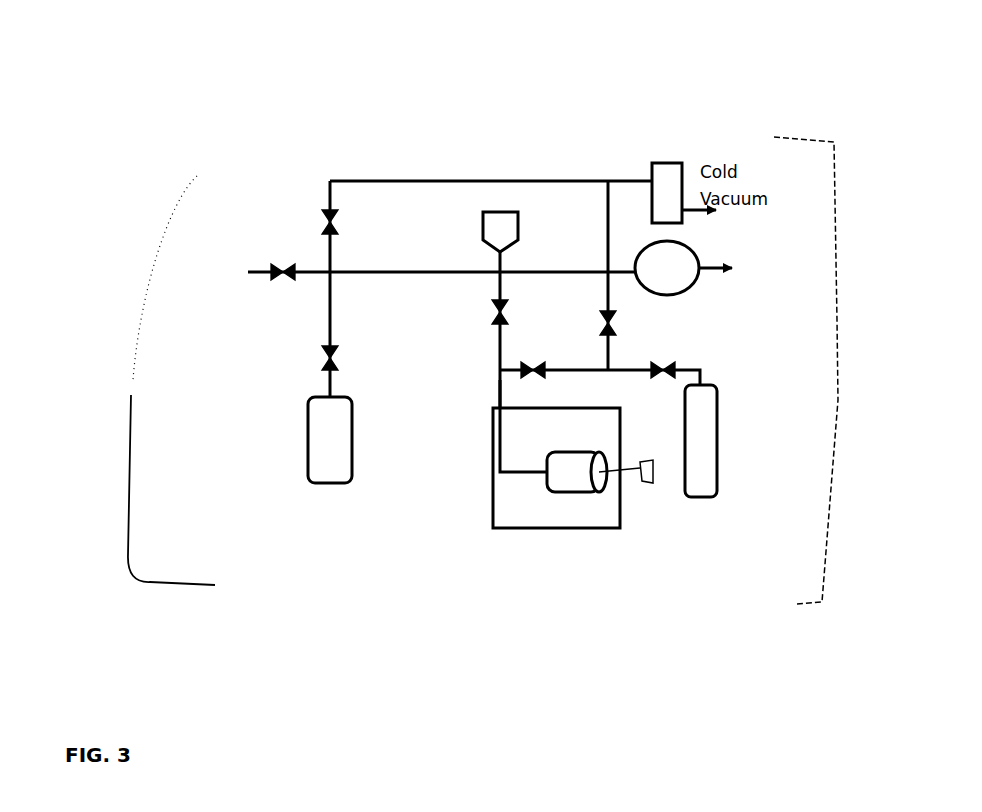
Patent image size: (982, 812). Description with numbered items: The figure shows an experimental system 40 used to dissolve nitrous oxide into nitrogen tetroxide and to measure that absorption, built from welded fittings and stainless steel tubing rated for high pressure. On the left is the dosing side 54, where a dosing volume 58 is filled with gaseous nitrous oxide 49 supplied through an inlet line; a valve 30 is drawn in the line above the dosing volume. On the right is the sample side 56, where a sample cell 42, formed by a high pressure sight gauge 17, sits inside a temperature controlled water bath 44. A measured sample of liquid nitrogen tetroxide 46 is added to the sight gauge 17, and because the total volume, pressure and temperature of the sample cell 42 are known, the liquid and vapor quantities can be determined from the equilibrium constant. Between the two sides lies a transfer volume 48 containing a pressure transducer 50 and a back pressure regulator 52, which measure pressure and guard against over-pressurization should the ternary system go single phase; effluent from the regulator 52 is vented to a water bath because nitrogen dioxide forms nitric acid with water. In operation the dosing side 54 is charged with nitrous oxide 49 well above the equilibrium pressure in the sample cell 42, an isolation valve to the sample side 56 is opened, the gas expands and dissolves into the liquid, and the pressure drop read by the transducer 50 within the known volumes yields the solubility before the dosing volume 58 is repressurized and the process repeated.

The system 40 is at (488, 92).
The valve 30 is at (311, 223).
The gaseous N2O 49 is at (247, 288).
The pressure transducer 50 is at (518, 232).
The back pressure regulator 52 is at (709, 279).
The dosing volume 58 is at (327, 489).
The transfer volume 48 is at (487, 396).
The water bath 44 is at (481, 496).
The sample cell 42 is at (583, 494).
The sight gauge 17 is at (649, 490).
The liquid N2O4 46 is at (726, 441).
The dosing side 54 is at (126, 380).
The sample side 56 is at (834, 370).